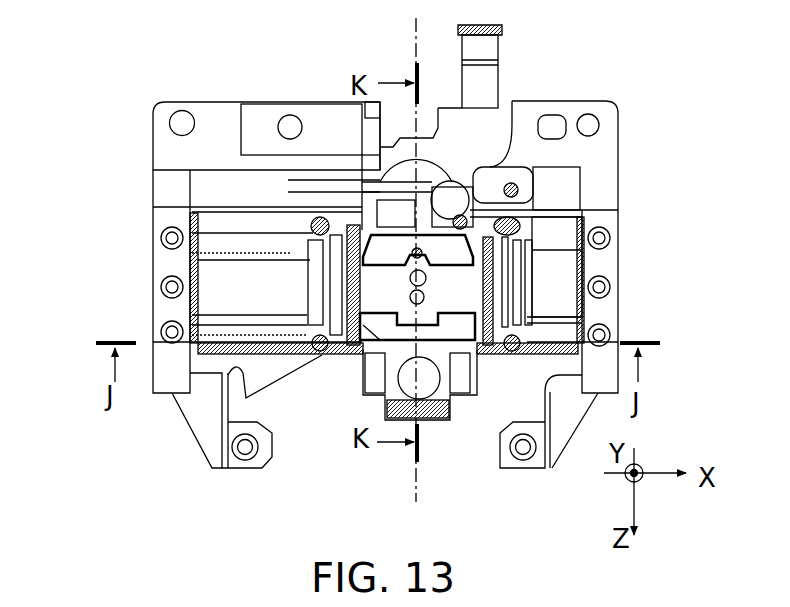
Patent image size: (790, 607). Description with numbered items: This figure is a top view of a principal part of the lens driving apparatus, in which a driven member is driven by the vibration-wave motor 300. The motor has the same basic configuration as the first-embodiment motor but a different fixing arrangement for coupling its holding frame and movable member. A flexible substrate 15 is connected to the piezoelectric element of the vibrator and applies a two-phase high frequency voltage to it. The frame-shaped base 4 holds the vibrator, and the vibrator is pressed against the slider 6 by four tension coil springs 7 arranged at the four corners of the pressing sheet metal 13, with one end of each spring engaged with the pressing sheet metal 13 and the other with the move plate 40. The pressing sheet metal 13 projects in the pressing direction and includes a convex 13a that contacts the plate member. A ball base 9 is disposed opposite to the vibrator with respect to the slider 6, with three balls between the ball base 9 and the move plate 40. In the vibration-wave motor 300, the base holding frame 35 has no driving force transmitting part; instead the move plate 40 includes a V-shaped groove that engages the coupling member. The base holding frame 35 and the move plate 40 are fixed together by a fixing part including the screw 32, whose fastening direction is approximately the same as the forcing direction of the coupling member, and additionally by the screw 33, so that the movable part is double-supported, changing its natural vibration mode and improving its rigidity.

The vibration-wave motor 300 is at (600, 78).
The flexible substrate 15 is at (500, 63).
The screw 33 is at (450, 195).
The base 4 is at (398, 250).
The tension coil springs 7 is at (343, 258).
The ball base 9 is at (238, 235).
The base holding frame 35 is at (313, 283).
The slider 6 is at (205, 272).
The pressing sheet metal 13 is at (357, 297).
The move plate 40 is at (352, 368).
The screw 32 is at (428, 392).
The convex 13a is at (419, 283).